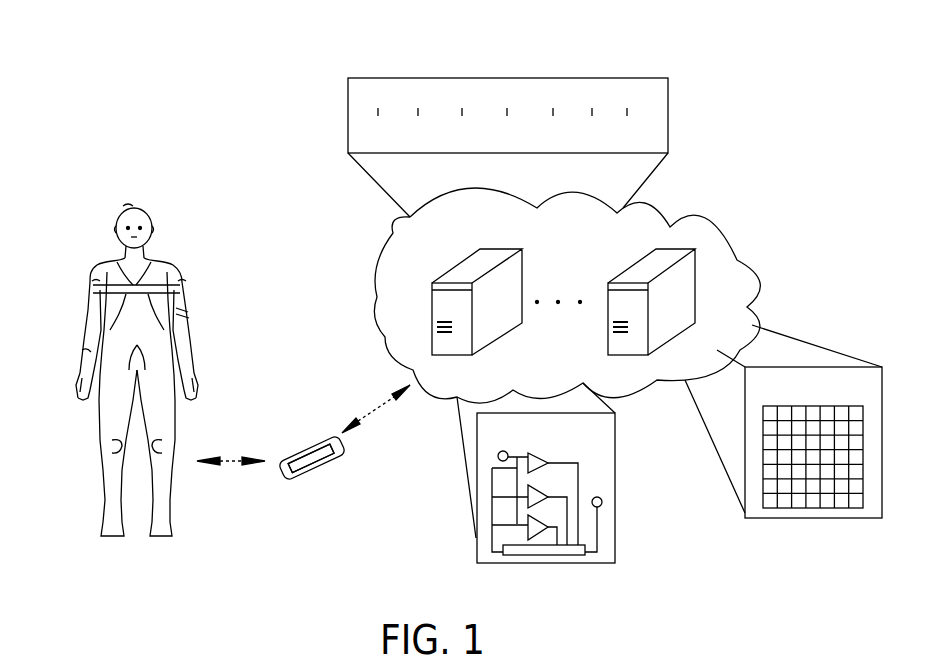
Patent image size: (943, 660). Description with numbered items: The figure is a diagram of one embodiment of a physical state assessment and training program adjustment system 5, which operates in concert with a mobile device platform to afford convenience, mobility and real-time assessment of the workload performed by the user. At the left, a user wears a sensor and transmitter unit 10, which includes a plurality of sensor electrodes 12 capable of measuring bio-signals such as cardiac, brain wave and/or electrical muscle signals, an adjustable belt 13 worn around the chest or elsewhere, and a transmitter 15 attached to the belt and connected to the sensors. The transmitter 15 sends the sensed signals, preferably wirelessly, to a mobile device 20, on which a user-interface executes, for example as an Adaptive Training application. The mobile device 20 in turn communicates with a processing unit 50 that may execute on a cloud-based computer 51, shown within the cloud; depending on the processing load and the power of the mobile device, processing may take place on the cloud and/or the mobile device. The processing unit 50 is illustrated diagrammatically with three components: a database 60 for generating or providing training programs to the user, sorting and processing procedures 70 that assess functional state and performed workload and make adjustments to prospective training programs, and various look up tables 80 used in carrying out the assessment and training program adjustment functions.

The physical state assessment and training program adjustment system 5 is at (767, 223).
The sensor and transmitter unit 10 is at (160, 243).
The sensor electrodes 12 is at (125, 205).
The adjustable belt 13 is at (181, 311).
The transmitter 15 is at (131, 300).
The mobile device 20 is at (318, 467).
The processing unit 50 is at (383, 253).
The cloud-based computer 51 is at (695, 290).
The database 60 is at (657, 77).
The sorting and processing procedures 70 is at (615, 523).
The look up tables 80 is at (800, 518).